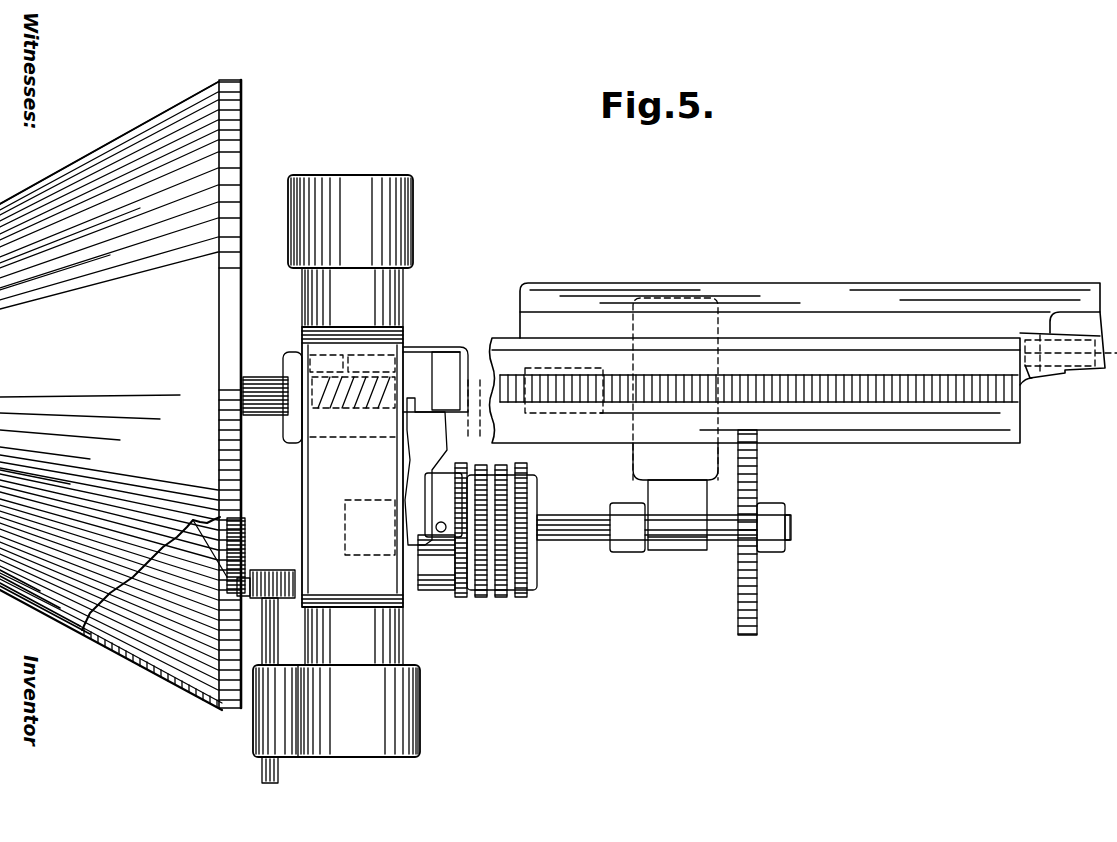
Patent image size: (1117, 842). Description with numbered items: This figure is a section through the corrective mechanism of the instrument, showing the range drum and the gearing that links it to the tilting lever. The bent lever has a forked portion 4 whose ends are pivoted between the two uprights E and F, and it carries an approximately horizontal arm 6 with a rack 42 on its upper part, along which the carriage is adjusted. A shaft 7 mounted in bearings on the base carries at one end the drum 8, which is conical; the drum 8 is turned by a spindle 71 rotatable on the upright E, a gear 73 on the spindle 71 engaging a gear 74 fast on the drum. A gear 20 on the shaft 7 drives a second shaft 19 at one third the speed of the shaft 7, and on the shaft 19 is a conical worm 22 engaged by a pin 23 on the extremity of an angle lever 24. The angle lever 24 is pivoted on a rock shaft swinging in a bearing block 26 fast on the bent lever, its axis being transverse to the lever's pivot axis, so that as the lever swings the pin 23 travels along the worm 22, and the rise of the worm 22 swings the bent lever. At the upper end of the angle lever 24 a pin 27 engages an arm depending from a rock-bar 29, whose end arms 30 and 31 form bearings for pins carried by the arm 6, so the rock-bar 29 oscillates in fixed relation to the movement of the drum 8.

The forked portion 4 is at (352, 466).
The horizontal arm 6 is at (1005, 418).
The shaft 7 is at (262, 416).
The drum 8 is at (190, 690).
The second shaft 19 is at (585, 548).
The gear 20 is at (760, 610).
The conical worm 22 is at (492, 598).
The pin 23 is at (436, 590).
The angle lever 24 is at (433, 457).
The bearing block 26 is at (430, 363).
The pin 27 is at (462, 448).
The rock-bar 29 is at (884, 288).
The arm 30 is at (1090, 372).
The arm 31 is at (545, 350).
The rack 42 is at (968, 400).
The spindle 71 is at (270, 628).
The gear 73 is at (290, 575).
The gear 74 is at (244, 556).
The upright E is at (422, 712).
The upright F is at (415, 222).